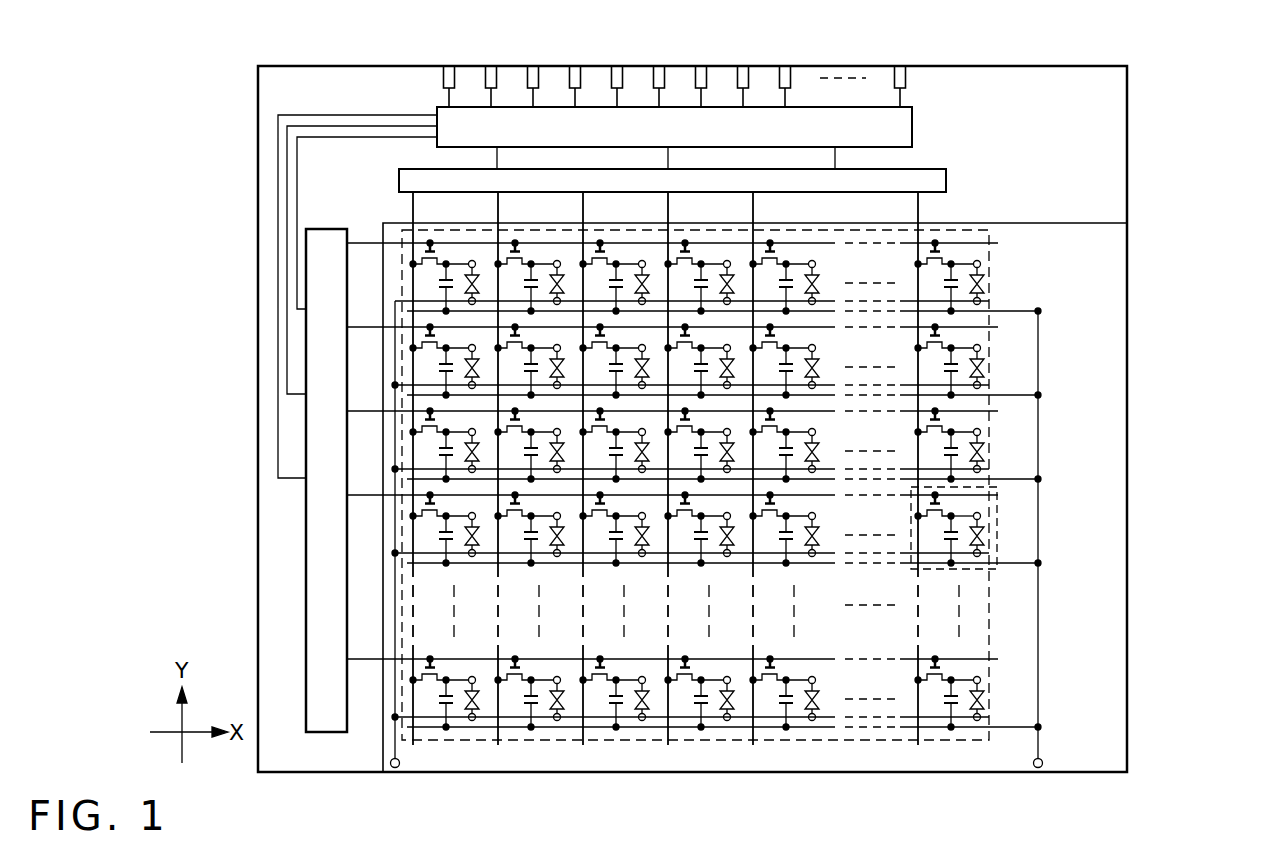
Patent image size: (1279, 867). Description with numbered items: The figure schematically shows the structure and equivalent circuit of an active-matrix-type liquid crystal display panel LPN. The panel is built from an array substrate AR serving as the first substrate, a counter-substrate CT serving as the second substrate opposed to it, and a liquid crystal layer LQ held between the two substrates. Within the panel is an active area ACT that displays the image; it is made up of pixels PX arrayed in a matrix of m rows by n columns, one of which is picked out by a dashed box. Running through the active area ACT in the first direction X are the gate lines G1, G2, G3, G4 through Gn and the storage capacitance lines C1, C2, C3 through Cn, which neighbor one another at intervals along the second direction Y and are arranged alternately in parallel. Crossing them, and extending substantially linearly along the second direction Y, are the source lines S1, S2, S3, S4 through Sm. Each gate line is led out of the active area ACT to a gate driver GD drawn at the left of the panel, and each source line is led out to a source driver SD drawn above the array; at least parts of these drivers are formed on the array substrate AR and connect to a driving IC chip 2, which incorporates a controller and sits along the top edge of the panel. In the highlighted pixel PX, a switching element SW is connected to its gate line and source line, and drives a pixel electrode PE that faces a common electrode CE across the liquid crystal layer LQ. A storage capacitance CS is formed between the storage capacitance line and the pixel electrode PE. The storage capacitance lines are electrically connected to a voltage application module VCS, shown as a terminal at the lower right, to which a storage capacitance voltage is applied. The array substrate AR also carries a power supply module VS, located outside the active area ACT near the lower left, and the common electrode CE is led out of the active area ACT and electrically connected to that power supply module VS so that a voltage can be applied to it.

The driving IC chip 2 is at (912, 107).
The liquid crystal display panel LPN is at (1152, 82).
The source driver SD is at (947, 179).
The gate driver GD is at (306, 592).
The counter-substrate CT is at (1095, 223).
The active area ACT is at (989, 333).
The array substrate AR is at (323, 760).
The gate line G1 is at (365, 242).
The gate line G2 is at (365, 326).
The gate line G3 is at (365, 410).
The gate line G4 is at (365, 494).
The gate line Gn is at (365, 658).
The source line S1 is at (416, 211).
The source line S2 is at (501, 211).
The source line S3 is at (586, 211).
The source line S4 is at (671, 211).
The source line Sm is at (921, 211).
The storage capacitance line C1 is at (1017, 309).
The storage capacitance line C2 is at (1017, 393).
The storage capacitance line C3 is at (1017, 477).
The storage capacitance line Cn is at (1017, 726).
The power supply module VS is at (399, 766).
The voltage application module VCS is at (1042, 759).
The pixel PX is at (997, 569).
The switching element SW is at (922, 510).
The storage capacitance CS is at (940, 537).
The pixel electrode PE is at (980, 515).
The liquid crystal layer LQ is at (985, 527).
The common electrode CE is at (981, 552).